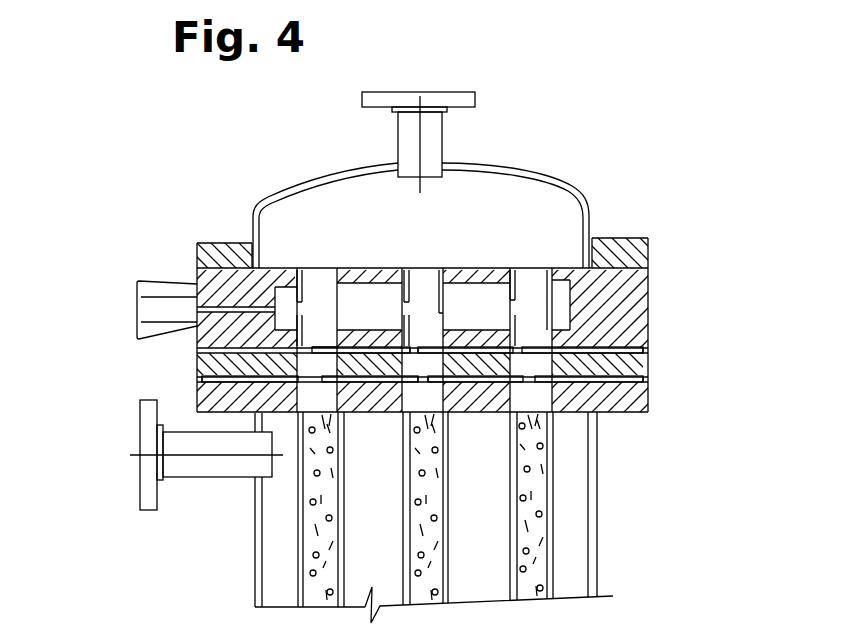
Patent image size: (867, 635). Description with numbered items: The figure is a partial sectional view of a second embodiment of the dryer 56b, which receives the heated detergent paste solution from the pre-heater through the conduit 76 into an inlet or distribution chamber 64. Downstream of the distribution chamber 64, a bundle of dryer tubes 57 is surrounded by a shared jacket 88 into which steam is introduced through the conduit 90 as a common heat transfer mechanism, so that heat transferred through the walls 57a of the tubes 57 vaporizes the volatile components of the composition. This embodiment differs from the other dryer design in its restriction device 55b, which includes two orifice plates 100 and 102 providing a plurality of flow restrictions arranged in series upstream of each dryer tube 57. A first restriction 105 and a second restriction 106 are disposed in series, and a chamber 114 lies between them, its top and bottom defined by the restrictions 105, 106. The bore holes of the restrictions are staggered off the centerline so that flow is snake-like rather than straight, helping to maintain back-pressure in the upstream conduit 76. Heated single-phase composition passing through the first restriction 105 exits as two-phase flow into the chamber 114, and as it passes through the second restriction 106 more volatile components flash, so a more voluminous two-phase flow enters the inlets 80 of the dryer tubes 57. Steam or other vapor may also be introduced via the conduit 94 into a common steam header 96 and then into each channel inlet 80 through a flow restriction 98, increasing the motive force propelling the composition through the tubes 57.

The restriction device 55b is at (652, 360).
The dryer 56b is at (242, 200).
The dryer tubes 57 is at (542, 487).
The walls of the tubes 57a is at (550, 533).
The inlet or distribution chamber 64 is at (490, 195).
The conduit 76 is at (421, 96).
The channel inlets 80 is at (330, 410).
The jacket 88 is at (275, 585).
The conduit 90 is at (140, 484).
The conduit 94 is at (157, 335).
The steam header 96 is at (597, 250).
The flow restriction 98 is at (300, 345).
The orifice plate 100 is at (650, 347).
The orifice plate 102 is at (650, 380).
The first restriction 105 is at (300, 308).
The second restriction 106 is at (490, 395).
The chamber 114 is at (386, 347).